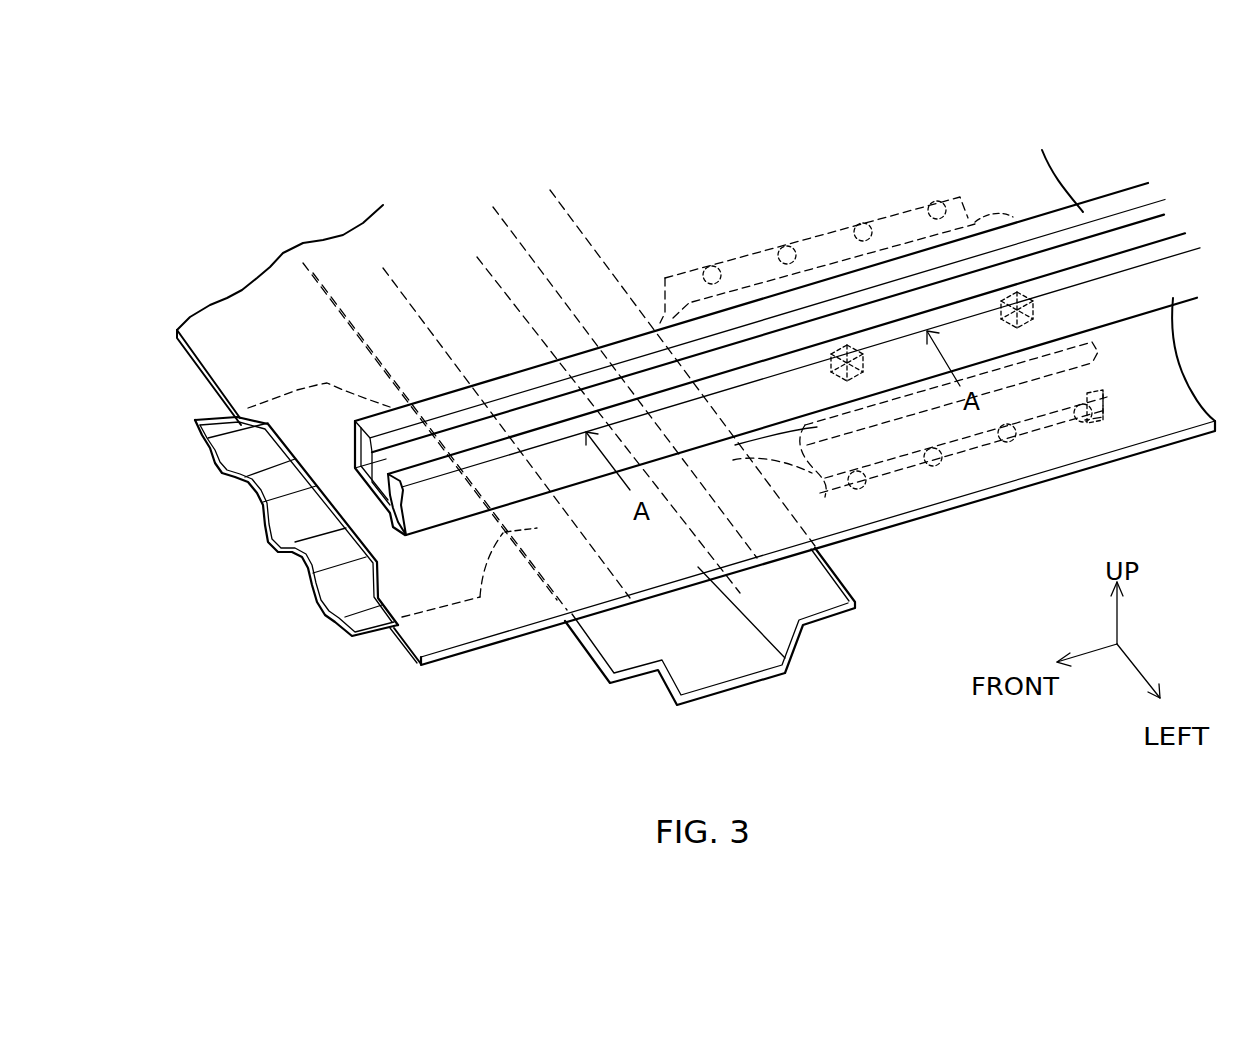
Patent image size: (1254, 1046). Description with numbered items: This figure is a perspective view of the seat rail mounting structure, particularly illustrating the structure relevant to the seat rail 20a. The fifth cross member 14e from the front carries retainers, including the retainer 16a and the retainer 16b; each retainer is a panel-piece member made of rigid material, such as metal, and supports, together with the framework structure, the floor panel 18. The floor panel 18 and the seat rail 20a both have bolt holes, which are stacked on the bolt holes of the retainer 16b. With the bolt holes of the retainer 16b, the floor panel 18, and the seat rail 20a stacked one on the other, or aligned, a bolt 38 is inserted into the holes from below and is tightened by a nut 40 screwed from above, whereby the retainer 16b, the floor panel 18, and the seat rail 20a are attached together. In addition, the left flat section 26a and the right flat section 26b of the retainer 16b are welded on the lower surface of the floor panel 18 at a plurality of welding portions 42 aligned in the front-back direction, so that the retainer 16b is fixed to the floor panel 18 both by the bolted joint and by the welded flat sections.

The floor panel 18 is at (447, 630).
The fifth cross member 14e is at (702, 653).
The retainer 16a is at (262, 532).
The retainer 16b is at (988, 210).
The seat rail 20a is at (502, 393).
The left flat section 26a is at (897, 513).
The right flat section 26b is at (748, 245).
The bolt 38 is at (1030, 292).
The nut 40 is at (1095, 392).
The welding portion 42 is at (862, 215).